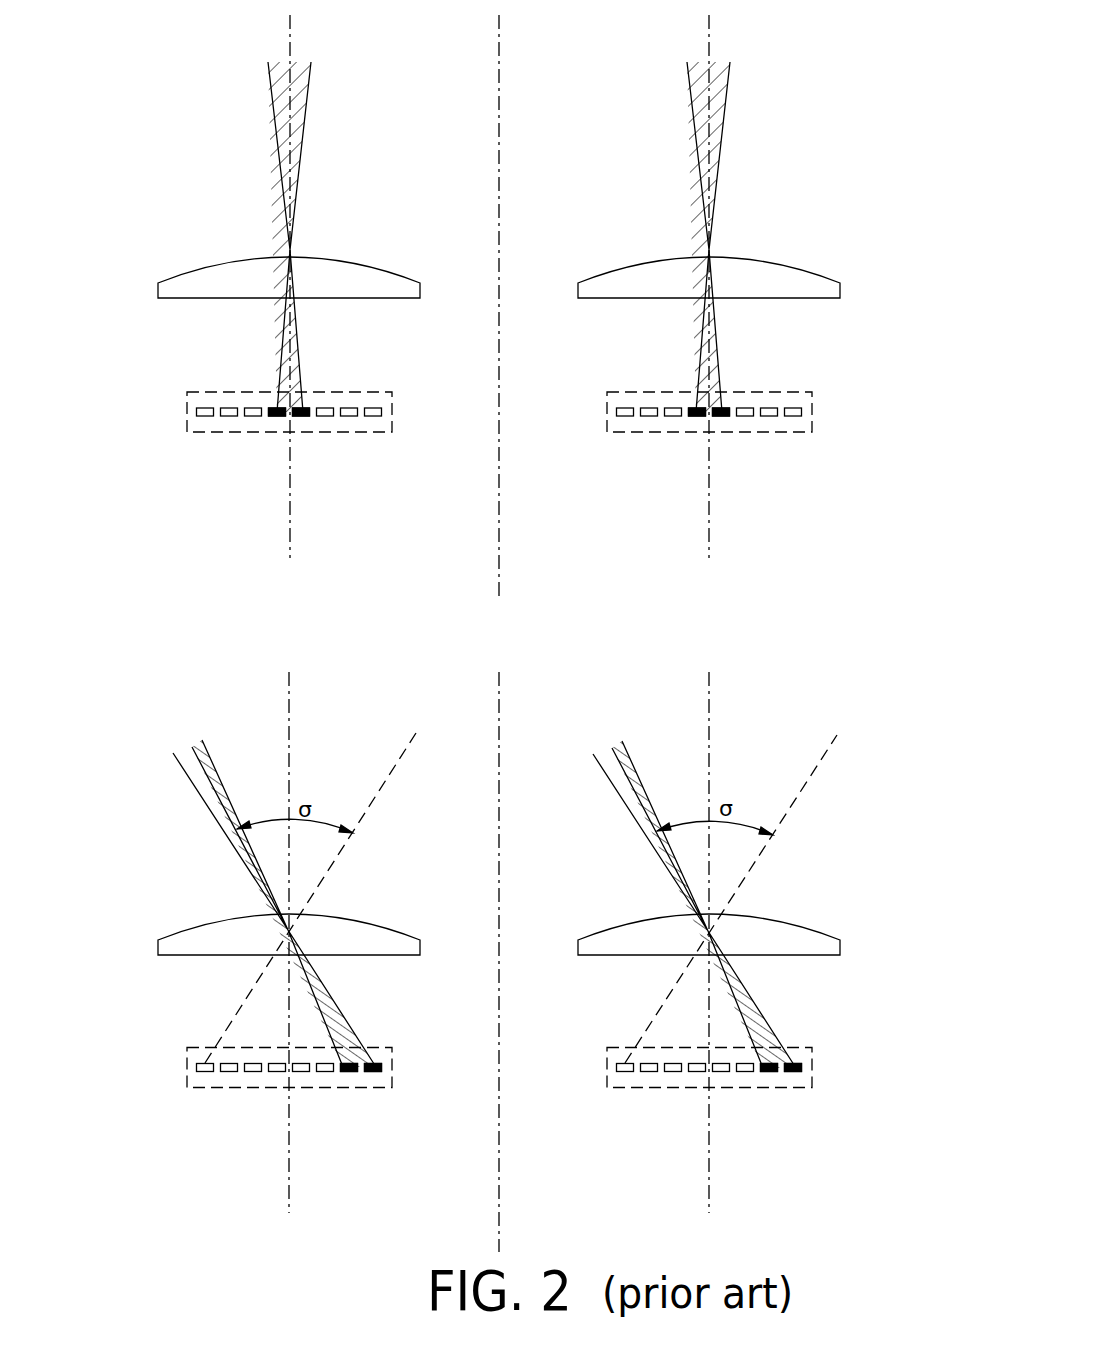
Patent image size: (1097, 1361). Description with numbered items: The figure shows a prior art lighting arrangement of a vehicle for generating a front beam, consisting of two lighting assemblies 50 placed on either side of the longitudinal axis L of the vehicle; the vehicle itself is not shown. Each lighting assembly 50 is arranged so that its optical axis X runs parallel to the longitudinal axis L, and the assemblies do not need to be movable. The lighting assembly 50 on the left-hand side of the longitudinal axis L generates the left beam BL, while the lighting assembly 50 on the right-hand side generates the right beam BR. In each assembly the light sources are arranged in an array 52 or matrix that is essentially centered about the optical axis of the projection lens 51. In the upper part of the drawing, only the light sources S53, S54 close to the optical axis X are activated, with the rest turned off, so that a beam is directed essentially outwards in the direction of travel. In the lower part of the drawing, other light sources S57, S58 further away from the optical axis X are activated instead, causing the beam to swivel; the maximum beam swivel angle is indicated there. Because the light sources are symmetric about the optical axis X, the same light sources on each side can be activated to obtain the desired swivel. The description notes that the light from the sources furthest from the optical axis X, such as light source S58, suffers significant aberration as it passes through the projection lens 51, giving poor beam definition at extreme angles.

The lighting assembly 50 is at (140, 108).
The projection lens 51 is at (182, 276).
The array 52 is at (187, 412).
The light source S53 is at (697, 416).
The light source S54 is at (301, 416).
The light source S57 is at (767, 1072).
The light source S58 is at (378, 1072).
The left beam BL is at (212, 765).
The right beam BR is at (722, 113).
The optical axis X is at (291, 522).
The longitudinal axis L is at (500, 545).